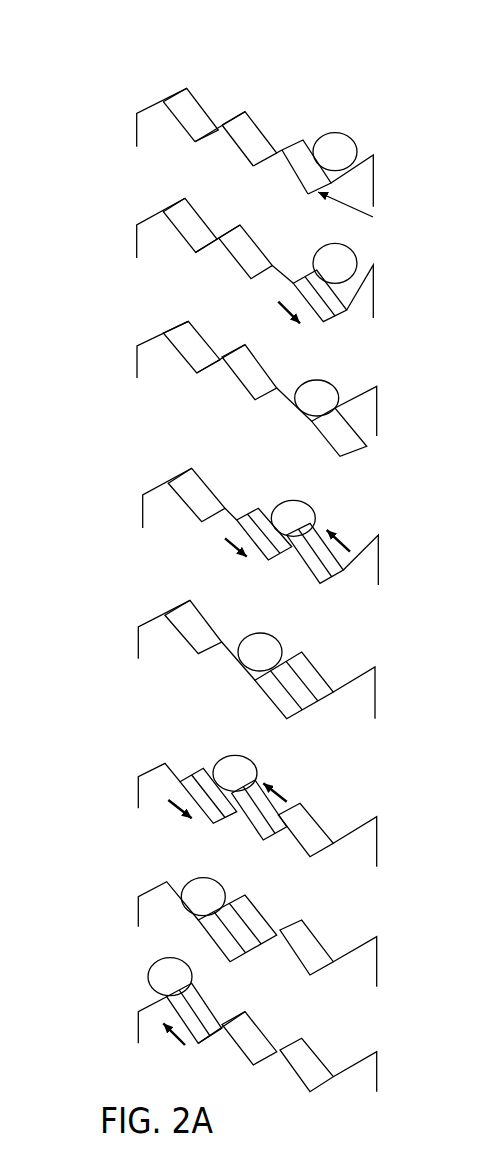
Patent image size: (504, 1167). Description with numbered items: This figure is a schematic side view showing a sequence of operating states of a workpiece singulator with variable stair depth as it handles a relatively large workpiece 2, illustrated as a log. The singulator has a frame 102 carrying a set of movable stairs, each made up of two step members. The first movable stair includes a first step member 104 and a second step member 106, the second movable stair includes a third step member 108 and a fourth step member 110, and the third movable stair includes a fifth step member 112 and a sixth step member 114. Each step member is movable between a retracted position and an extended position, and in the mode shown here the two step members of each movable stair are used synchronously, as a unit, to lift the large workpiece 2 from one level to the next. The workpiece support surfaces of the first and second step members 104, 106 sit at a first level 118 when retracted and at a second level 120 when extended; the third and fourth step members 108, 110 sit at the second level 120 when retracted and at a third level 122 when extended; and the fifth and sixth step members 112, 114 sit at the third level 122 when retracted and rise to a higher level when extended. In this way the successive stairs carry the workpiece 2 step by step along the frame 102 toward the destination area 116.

The workpiece 2 is at (337, 158).
The frame 102 is at (377, 158).
The first step member 104 is at (301, 140).
The second step member 106 is at (288, 146).
The third step member 108 is at (242, 112).
The fourth step member 110 is at (230, 118).
The fifth step member 112 is at (183, 90).
The sixth step member 114 is at (170, 95).
The destination area 116 is at (147, 108).
The first level 118 is at (373, 217).
The second level 120 is at (247, 172).
The third level 122 is at (190, 143).